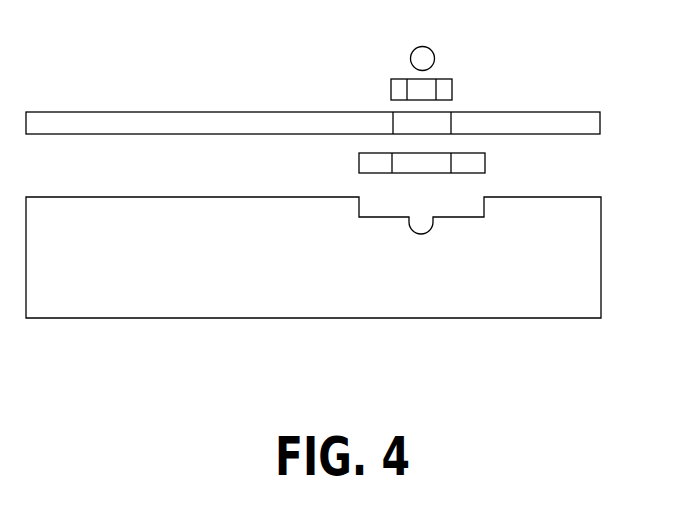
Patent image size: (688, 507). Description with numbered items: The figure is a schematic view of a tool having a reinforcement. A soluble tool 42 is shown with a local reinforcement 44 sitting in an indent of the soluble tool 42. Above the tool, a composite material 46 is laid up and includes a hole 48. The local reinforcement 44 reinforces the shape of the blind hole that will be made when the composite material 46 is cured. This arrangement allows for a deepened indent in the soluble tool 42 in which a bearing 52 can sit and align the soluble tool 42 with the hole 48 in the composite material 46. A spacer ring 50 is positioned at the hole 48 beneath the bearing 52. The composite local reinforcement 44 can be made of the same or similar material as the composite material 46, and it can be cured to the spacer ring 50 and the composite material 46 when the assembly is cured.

The soluble tool 42 is at (602, 256).
The local reinforcement 44 is at (486, 163).
The composite material 46 is at (602, 125).
The hole 48 is at (385, 116).
The spacer ring 50 is at (452, 90).
The bearing 52 is at (410, 58).